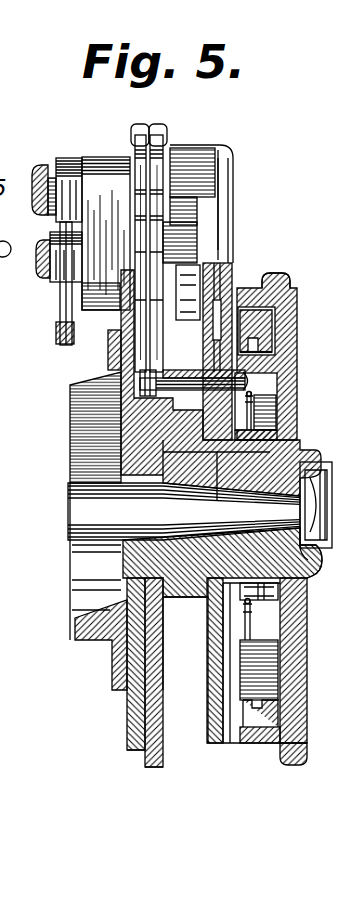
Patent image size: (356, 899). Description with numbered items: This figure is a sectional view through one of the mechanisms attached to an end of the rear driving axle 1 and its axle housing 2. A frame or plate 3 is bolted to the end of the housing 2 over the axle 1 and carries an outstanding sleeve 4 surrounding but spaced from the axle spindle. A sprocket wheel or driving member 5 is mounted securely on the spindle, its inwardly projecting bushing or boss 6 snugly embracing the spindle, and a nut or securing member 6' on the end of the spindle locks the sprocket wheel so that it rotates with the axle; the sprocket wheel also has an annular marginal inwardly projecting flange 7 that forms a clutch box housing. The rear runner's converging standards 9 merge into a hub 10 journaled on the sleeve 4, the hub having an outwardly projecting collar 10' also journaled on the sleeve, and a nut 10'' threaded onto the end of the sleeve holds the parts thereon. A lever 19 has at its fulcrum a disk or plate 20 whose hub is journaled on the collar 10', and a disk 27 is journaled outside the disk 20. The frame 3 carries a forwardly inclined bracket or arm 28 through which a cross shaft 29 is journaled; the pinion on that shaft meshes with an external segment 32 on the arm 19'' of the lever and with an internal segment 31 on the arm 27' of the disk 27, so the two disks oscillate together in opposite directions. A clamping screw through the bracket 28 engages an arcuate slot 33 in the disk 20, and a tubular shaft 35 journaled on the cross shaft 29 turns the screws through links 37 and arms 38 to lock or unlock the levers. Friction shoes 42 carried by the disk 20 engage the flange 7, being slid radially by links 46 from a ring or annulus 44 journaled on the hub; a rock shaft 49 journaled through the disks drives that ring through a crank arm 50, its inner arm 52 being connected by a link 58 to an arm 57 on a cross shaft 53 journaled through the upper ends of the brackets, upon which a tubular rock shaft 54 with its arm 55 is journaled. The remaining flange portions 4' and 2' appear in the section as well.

The rear driving axle 1 is at (87, 510).
The axle housing 2 is at (73, 644).
The frame or plate 3 is at (118, 446).
The sleeve 4 is at (199, 442).
The housing flange 4' is at (327, 565).
The sprocket wheel or driving member 5 is at (262, 390).
The bushing or boss 6 is at (328, 504).
The nut or securing member 6' is at (309, 558).
The annular marginal inwardly projecting flange 7 is at (250, 290).
The converging standards 9 is at (152, 750).
The hub 10 is at (169, 562).
The sleeve or collar 10' is at (185, 631).
The nut 10'' is at (295, 432).
The lever 19 is at (257, 690).
The arm of lever 19'' is at (252, 322).
The disk or plate 20 is at (213, 650).
The disk 27 is at (190, 729).
The arm of disk 27' is at (251, 204).
The bracket or arm 28 is at (105, 175).
The cross shaft 29 is at (38, 262).
The internal segment 31 is at (215, 172).
The external segment 32 is at (209, 203).
The arcuate slot 33 is at (258, 333).
The tubular shaft 35 is at (58, 284).
The links 37 is at (62, 320).
The arms 38 is at (65, 346).
The friction shoes 42 is at (277, 303).
The ring or annulus 44 is at (238, 647).
The links 46 is at (258, 412).
The rock shaft 49 is at (240, 370).
The crank arm 50 is at (270, 400).
The arm 52 is at (75, 426).
The cross shaft 53 is at (38, 185).
The tubular rock shaft 54 is at (50, 160).
The arm 55 is at (50, 232).
The arm 57 is at (158, 157).
The link 58 is at (145, 184).
The clip 2' is at (298, 617).